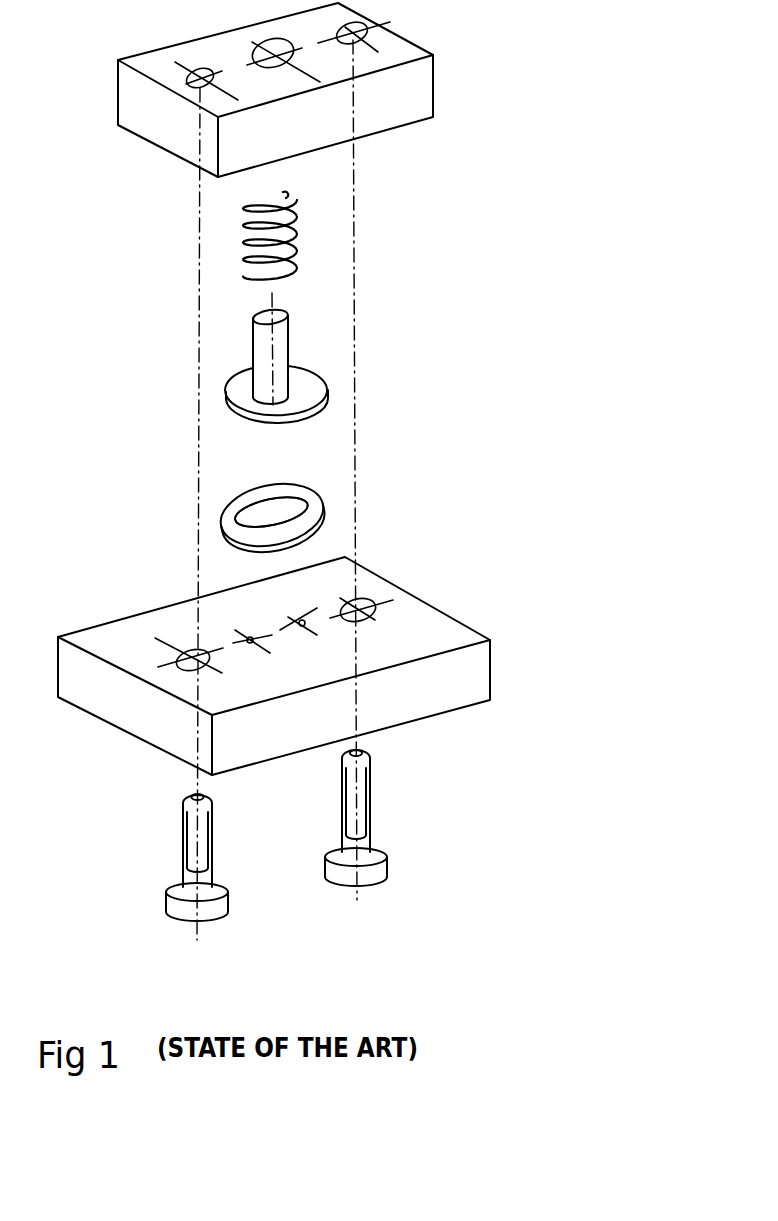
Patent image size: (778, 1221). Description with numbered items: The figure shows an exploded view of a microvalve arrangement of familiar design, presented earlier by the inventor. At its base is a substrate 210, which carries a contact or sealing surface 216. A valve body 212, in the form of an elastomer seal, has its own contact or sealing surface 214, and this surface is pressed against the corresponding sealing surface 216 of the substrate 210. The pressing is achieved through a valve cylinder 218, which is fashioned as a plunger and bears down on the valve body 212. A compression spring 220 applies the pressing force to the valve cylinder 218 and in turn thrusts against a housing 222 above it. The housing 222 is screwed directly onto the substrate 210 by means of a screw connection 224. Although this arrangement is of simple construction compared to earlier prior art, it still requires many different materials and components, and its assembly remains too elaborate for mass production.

The substrate 210 is at (462, 633).
The valve body 212 is at (320, 492).
The contact or sealing surface 214 is at (322, 525).
The contact or sealing surface 216 is at (318, 612).
The valve cylinder 218 is at (320, 373).
The compression spring 220 is at (295, 220).
The housing 222 is at (433, 90).
The screw connection 224 is at (226, 910).